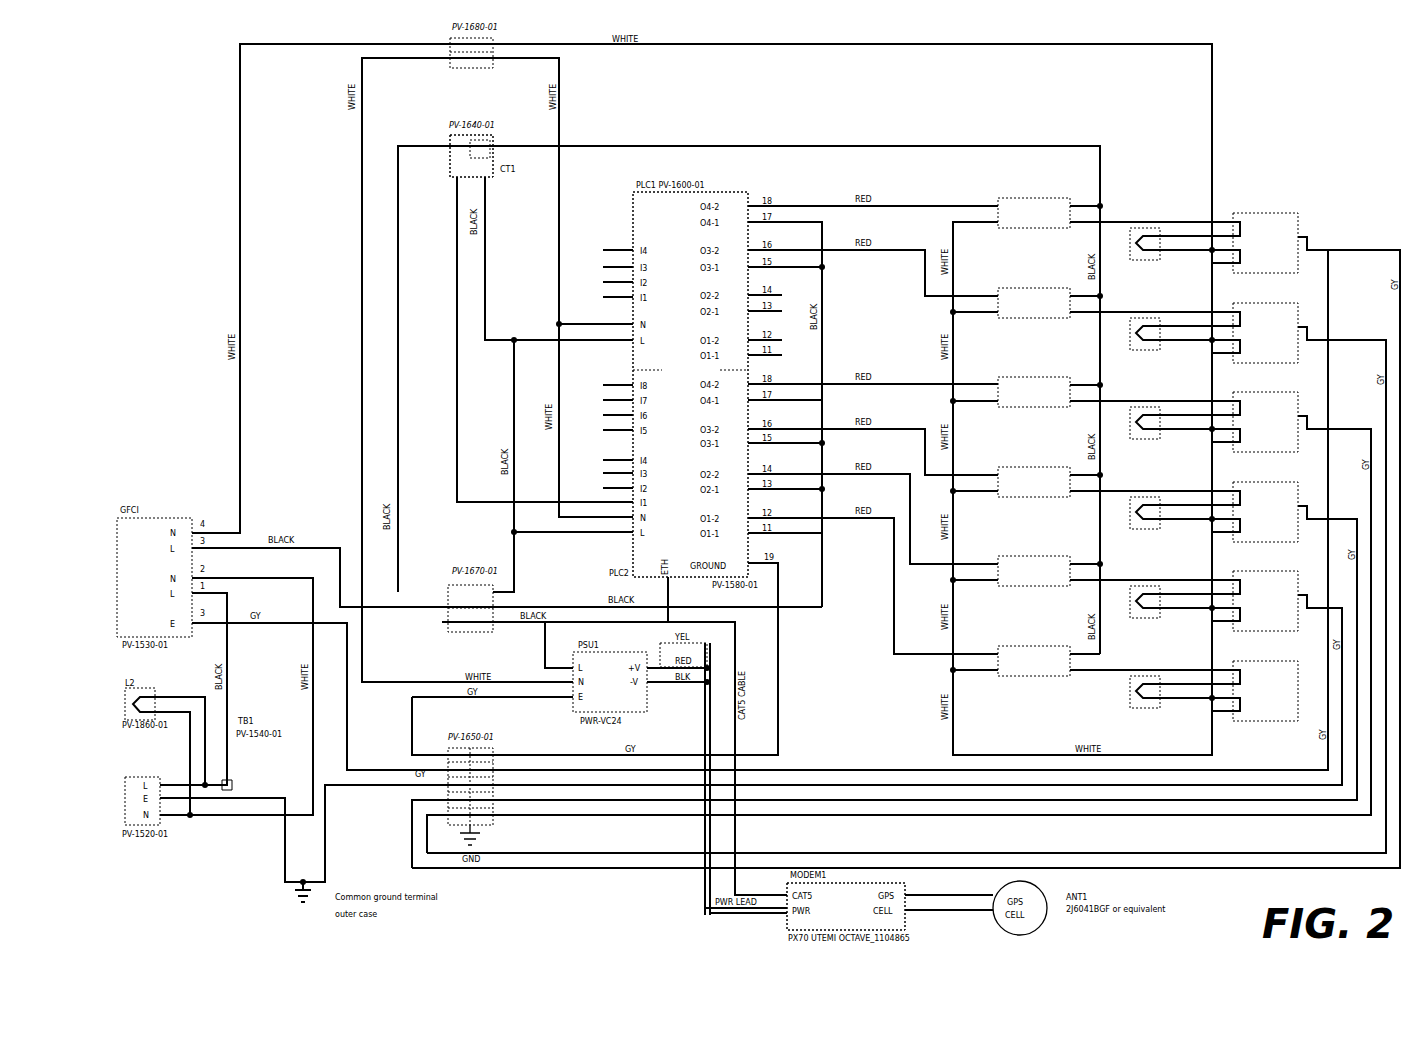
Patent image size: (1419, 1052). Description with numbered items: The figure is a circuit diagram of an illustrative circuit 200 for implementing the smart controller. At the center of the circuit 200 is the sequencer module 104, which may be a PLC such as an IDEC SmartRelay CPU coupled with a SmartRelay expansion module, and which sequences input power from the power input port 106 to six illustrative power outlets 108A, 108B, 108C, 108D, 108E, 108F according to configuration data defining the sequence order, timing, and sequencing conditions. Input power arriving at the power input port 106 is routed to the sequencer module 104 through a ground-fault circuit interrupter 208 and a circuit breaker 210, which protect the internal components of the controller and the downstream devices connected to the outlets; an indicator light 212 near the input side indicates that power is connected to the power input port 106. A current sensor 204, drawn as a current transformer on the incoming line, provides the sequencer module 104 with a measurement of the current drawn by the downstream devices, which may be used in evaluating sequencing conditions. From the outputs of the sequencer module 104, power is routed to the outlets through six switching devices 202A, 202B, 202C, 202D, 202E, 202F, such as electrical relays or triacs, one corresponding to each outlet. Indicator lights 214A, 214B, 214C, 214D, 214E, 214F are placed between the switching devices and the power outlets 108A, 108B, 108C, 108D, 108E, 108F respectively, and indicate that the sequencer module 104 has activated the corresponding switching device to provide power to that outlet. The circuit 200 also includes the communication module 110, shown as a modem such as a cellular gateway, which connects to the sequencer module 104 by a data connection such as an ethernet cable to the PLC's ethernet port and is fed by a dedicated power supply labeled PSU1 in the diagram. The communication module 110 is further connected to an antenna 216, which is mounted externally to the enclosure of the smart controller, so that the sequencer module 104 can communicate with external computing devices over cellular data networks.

The circuit 200 is at (1286, 76).
The current sensor 204 is at (456, 156).
The sequencer module 104 is at (690, 384).
The ground-fault circuit interrupter (GFCI) 208 is at (158, 535).
The indicator light 212 is at (140, 700).
The circuit breaker 210 is at (232, 718).
The power input port 106 is at (140, 780).
The communication module 110 is at (848, 892).
The antenna 216 is at (1022, 882).
The switching device 202A is at (1048, 206).
The switching device 202B is at (1048, 296).
The switching device 202C is at (1048, 385).
The switching device 202D is at (1048, 475).
The switching device 202E is at (1048, 564).
The switching device 202F is at (1066, 672).
The indicator light 214A is at (1138, 234).
The indicator light 214B is at (1138, 324).
The indicator light 214C is at (1138, 413).
The indicator light 214D is at (1138, 503).
The indicator light 214E is at (1138, 592).
The indicator light 214F is at (1138, 682).
The power outlet 108A is at (1292, 222).
The power outlet 108B is at (1292, 312).
The power outlet 108C is at (1292, 401).
The power outlet 108D is at (1292, 491).
The power outlet 108E is at (1292, 580).
The power outlet 108F is at (1270, 712).